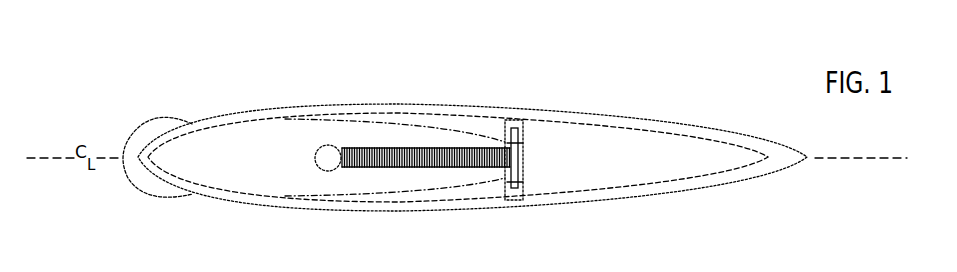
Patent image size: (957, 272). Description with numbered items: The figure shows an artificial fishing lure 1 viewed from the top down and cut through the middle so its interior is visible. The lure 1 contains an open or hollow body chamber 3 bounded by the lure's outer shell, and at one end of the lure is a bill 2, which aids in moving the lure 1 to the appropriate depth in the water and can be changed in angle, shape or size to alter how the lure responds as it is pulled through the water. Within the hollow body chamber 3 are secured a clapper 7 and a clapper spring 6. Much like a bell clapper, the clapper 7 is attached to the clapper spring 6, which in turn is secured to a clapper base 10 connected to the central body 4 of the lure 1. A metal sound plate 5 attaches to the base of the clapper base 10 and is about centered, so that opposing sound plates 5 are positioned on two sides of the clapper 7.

The fishing lure 1 is at (255, 110).
The bill 2 is at (140, 193).
The hollow body chamber 3 is at (230, 165).
The central body 4 is at (516, 200).
The metal sound plate 5 is at (426, 190).
The clapper spring 6 is at (363, 168).
The clapper 7 is at (325, 165).
The clapper base 10 is at (515, 160).